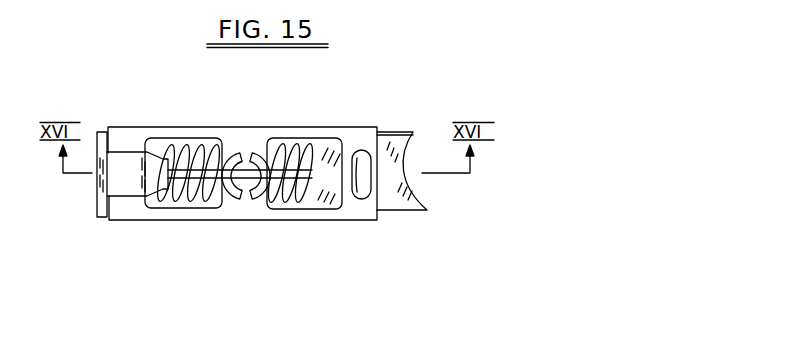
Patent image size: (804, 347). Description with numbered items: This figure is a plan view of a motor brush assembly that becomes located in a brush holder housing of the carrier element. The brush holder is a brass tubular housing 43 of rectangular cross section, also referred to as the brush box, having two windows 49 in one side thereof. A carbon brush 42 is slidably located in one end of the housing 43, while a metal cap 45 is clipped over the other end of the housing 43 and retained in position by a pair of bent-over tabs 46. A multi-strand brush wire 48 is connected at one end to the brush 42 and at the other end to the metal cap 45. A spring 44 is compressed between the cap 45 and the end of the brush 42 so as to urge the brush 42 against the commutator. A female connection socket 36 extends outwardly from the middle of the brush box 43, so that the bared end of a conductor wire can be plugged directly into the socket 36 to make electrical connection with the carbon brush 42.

The female connection socket 36 is at (238, 163).
The carbon brush 42 is at (398, 153).
The housing 43 is at (324, 212).
The spring 44 is at (187, 149).
The metal cap 45 is at (94, 200).
The bent-over tabs 46 is at (128, 168).
The multi-strand brush wire 48 is at (213, 178).
The windows 49 is at (212, 143).